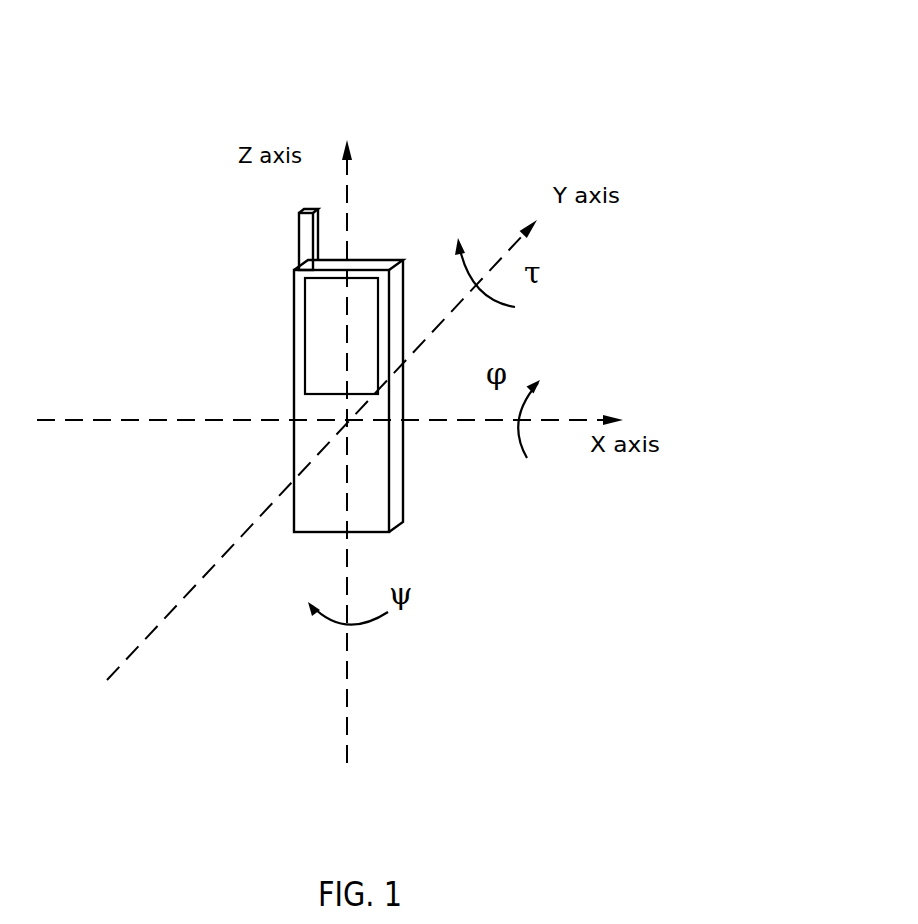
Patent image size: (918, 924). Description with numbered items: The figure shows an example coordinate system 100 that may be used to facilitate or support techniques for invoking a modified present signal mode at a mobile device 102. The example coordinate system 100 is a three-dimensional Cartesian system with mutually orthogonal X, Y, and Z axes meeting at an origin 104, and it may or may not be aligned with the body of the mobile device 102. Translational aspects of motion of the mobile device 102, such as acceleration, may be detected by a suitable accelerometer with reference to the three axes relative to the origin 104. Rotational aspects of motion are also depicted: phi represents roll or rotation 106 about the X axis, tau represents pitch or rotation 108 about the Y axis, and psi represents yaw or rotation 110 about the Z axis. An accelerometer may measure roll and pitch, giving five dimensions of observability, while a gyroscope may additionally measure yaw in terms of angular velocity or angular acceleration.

The example coordinate system 100 is at (720, 59).
The mobile device 102 is at (294, 315).
The origin 104 is at (348, 421).
The roll or rotation about an X axis 106 is at (518, 405).
The pitch or rotation about a Y axis 108 is at (458, 268).
The yaw or rotation about a Z axis 110 is at (370, 626).